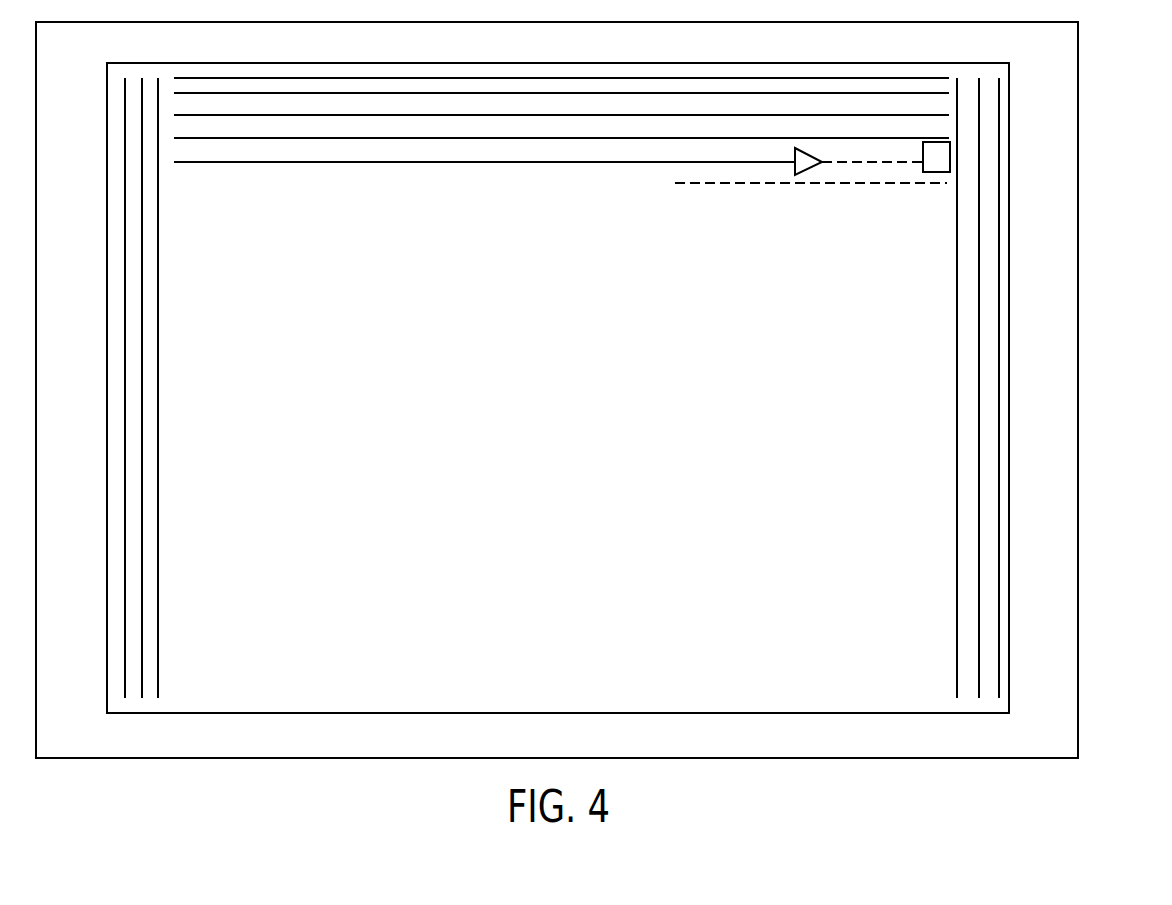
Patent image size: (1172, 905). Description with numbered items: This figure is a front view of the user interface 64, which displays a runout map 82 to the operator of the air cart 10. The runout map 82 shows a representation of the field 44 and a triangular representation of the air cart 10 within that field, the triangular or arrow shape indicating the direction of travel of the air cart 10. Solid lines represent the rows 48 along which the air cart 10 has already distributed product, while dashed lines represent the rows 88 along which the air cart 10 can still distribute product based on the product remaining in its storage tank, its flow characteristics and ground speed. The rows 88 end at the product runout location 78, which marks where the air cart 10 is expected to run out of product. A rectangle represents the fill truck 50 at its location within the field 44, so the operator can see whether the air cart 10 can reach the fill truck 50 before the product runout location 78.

The user interface 64 is at (1078, 58).
The runout map 82 is at (1017, 278).
The field 44 is at (297, 387).
The rows 48 is at (425, 93).
The air cart 10 is at (805, 175).
The rows 88 is at (881, 185).
The product runout location 78 is at (672, 183).
The fill truck 50 is at (935, 155).